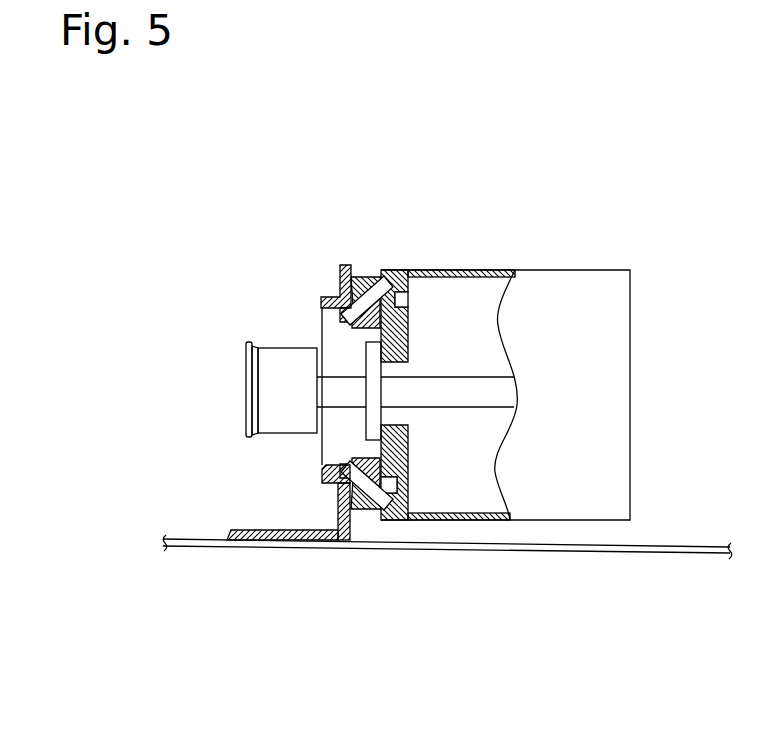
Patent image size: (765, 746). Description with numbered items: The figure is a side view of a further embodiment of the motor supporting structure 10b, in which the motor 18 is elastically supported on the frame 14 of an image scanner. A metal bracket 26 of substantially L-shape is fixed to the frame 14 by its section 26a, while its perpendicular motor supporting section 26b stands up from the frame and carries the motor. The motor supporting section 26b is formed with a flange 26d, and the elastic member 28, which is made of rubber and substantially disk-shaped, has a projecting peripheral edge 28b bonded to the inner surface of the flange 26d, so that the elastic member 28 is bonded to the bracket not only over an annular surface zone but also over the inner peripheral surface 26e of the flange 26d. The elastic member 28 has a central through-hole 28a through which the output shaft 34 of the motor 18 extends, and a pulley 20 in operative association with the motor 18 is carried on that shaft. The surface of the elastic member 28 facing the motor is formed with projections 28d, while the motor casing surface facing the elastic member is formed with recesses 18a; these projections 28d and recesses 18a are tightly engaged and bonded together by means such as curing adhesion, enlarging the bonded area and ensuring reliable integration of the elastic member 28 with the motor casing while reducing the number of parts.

The motor supporting structure 10b is at (338, 240).
The frame 14 is at (577, 548).
The motor 18 is at (547, 283).
The recesses 18a is at (392, 283).
The pulley 20 is at (277, 406).
The bracket 26 is at (268, 451).
The section fixed to the frame 26a is at (347, 600).
The motor supporting section 26b is at (315, 547).
The flange 26d is at (322, 299).
The inner peripheral surface 26e is at (322, 461).
The elastic member 28 is at (360, 278).
The through-hole 28a is at (345, 327).
The projecting peripheral edge 28b is at (338, 314).
The projections 28d is at (402, 300).
The output shaft 34 is at (493, 392).